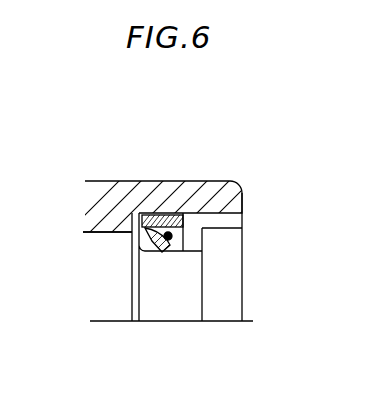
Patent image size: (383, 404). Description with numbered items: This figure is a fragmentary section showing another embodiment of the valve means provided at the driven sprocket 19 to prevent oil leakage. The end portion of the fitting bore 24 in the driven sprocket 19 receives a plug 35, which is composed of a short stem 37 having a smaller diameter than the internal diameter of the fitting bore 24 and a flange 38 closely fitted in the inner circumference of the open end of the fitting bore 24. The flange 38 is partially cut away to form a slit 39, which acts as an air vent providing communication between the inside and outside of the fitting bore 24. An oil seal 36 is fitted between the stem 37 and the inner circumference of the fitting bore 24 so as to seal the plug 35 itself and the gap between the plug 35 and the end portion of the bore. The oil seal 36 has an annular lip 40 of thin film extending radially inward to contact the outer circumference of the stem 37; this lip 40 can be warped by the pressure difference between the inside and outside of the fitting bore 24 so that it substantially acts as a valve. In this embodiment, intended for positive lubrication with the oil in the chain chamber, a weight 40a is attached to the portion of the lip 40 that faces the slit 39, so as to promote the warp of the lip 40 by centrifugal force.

The driven sprocket 19 is at (106, 195).
The fitting bore 24 is at (88, 233).
The plug 35 is at (247, 283).
The oil seal 36 is at (146, 215).
The stem 37 is at (174, 349).
The flange 38 is at (223, 305).
The slit 39 is at (224, 219).
The lip 40 is at (135, 254).
The weight 40a is at (176, 214).